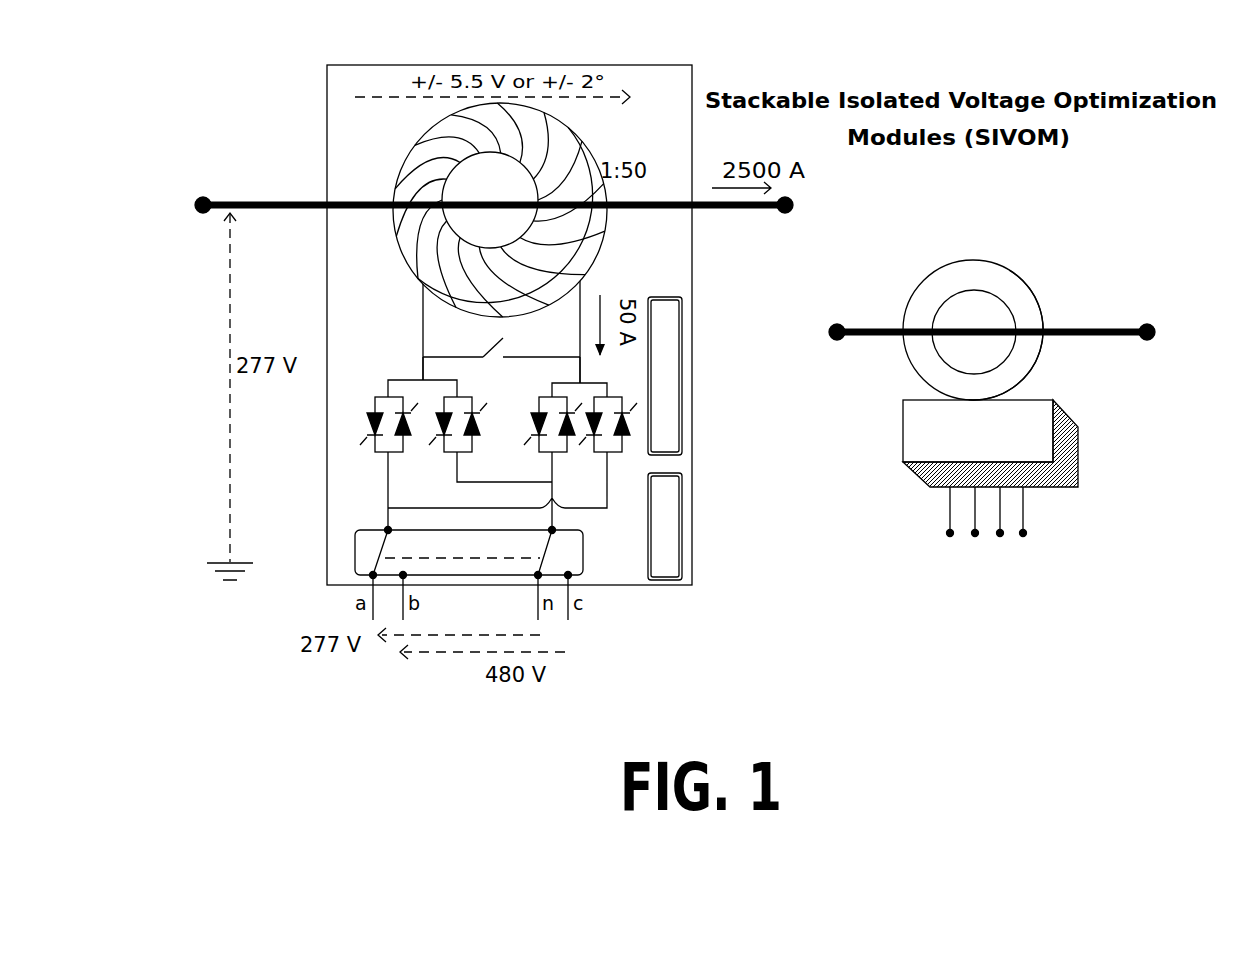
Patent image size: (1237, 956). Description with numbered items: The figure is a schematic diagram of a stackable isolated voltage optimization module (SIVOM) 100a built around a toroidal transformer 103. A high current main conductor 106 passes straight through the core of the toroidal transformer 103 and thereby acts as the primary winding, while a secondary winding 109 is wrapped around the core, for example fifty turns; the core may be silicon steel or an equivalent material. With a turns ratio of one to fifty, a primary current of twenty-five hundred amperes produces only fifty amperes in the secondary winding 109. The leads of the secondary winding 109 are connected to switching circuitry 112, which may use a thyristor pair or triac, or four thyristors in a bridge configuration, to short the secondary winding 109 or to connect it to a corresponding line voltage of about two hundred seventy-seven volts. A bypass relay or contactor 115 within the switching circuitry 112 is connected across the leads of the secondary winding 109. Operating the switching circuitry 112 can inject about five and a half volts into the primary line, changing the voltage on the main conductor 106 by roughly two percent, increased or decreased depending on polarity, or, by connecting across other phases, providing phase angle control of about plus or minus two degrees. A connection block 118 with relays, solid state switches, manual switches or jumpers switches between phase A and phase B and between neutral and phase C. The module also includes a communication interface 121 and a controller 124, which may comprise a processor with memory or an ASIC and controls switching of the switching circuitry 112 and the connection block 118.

The stackable isolated voltage optimization module (SIVOM) 100a is at (857, 360).
The toroidal transformer (TT) 103 is at (352, 143).
The main conductor 106 is at (279, 198).
The secondary winding 109 is at (400, 225).
The switching circuitry 112 is at (352, 426).
The contactor 115 is at (478, 344).
The connection block 118 is at (583, 555).
The communication interface 121 is at (682, 405).
The controller 124 is at (682, 545).